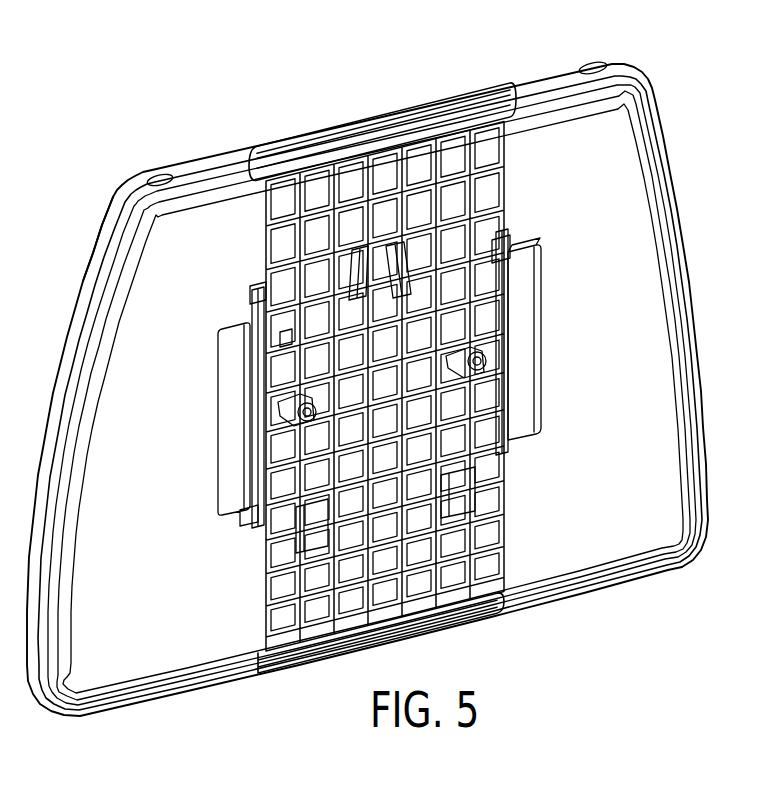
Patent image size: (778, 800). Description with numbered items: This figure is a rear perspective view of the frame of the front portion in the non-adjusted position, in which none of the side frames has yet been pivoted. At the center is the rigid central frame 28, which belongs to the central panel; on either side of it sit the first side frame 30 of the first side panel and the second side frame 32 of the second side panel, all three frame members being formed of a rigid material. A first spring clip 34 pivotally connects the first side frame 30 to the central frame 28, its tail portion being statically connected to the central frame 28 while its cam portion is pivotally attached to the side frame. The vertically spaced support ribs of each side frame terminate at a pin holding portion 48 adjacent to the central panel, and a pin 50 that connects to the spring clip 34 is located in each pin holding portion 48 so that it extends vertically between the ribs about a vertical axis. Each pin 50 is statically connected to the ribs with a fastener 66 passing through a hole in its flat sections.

The central frame 28 is at (408, 130).
The first side frame 30 is at (650, 147).
The second side frame 32 is at (117, 220).
The first spring clip 34 is at (520, 357).
The pin holding portion 48 is at (497, 248).
The pin 50 is at (490, 338).
The fastener 66 is at (500, 173).